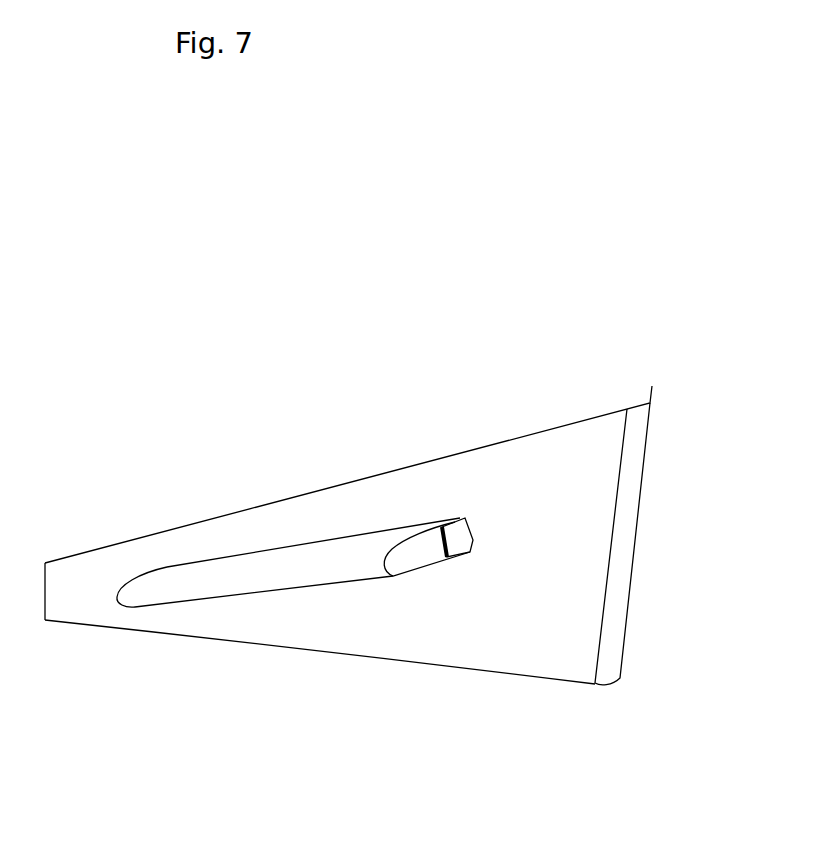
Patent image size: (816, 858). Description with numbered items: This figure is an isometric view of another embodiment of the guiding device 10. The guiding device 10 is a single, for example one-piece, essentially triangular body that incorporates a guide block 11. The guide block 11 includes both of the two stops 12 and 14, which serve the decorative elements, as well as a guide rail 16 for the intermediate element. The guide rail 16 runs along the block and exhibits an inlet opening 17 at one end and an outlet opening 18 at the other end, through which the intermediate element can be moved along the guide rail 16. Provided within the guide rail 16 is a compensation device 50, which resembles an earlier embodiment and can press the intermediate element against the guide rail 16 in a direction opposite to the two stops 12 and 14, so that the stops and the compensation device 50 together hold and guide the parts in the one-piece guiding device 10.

The guiding device 10 is at (190, 430).
The guide block 11 is at (123, 543).
The stop 12 is at (376, 632).
The stop 14 is at (334, 506).
The guide rail 16 is at (235, 590).
The inlet opening 17 is at (422, 562).
The outlet opening 18 is at (116, 597).
The compensation device 50 is at (462, 518).